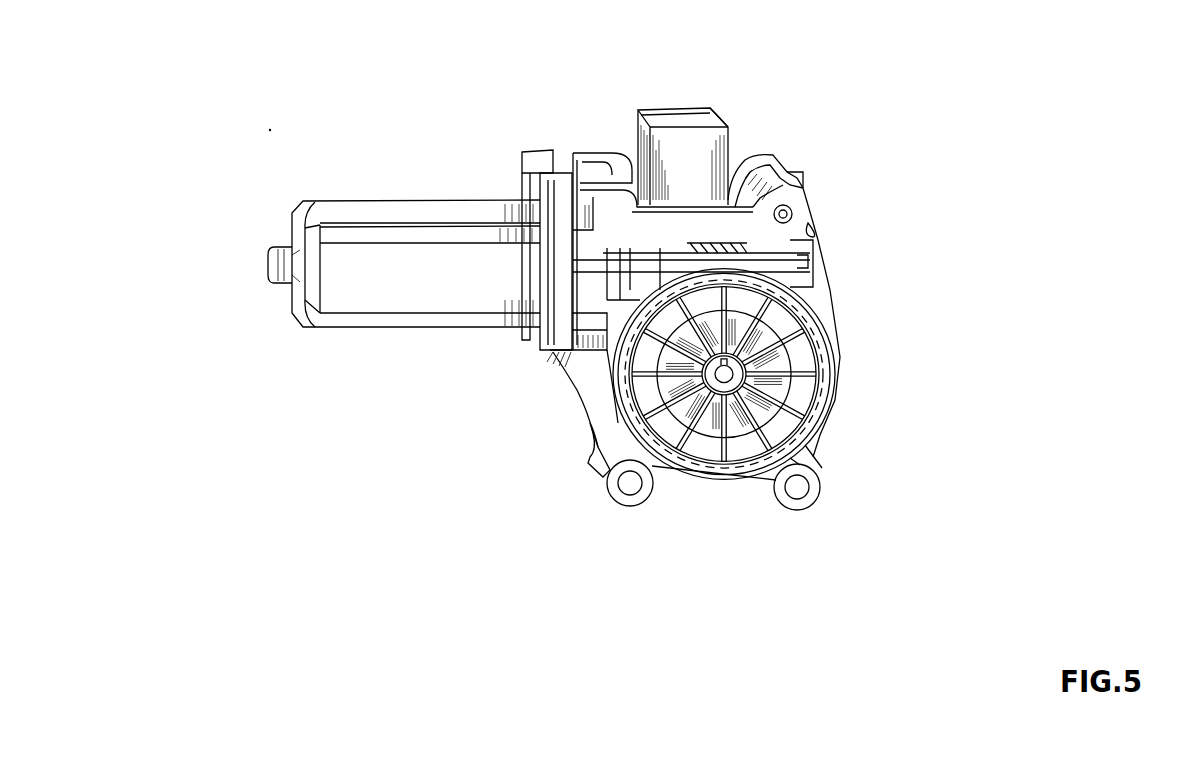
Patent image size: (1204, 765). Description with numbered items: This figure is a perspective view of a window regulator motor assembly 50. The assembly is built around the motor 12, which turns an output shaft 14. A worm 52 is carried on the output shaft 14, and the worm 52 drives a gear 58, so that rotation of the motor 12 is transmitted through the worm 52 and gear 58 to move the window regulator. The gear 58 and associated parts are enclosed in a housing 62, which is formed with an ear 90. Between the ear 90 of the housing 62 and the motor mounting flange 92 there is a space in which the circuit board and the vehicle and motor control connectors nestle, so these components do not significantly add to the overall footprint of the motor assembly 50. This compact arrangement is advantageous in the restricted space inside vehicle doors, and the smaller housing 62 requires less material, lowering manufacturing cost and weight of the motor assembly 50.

The window regulator motor assembly 50 is at (793, 34).
The motor 12 is at (357, 210).
The motor mounting flange 92 is at (527, 177).
The output shaft 14 is at (810, 258).
The worm 52 is at (793, 218).
The gear 58 is at (840, 357).
The housing 62 is at (812, 435).
The ear 90 is at (620, 497).